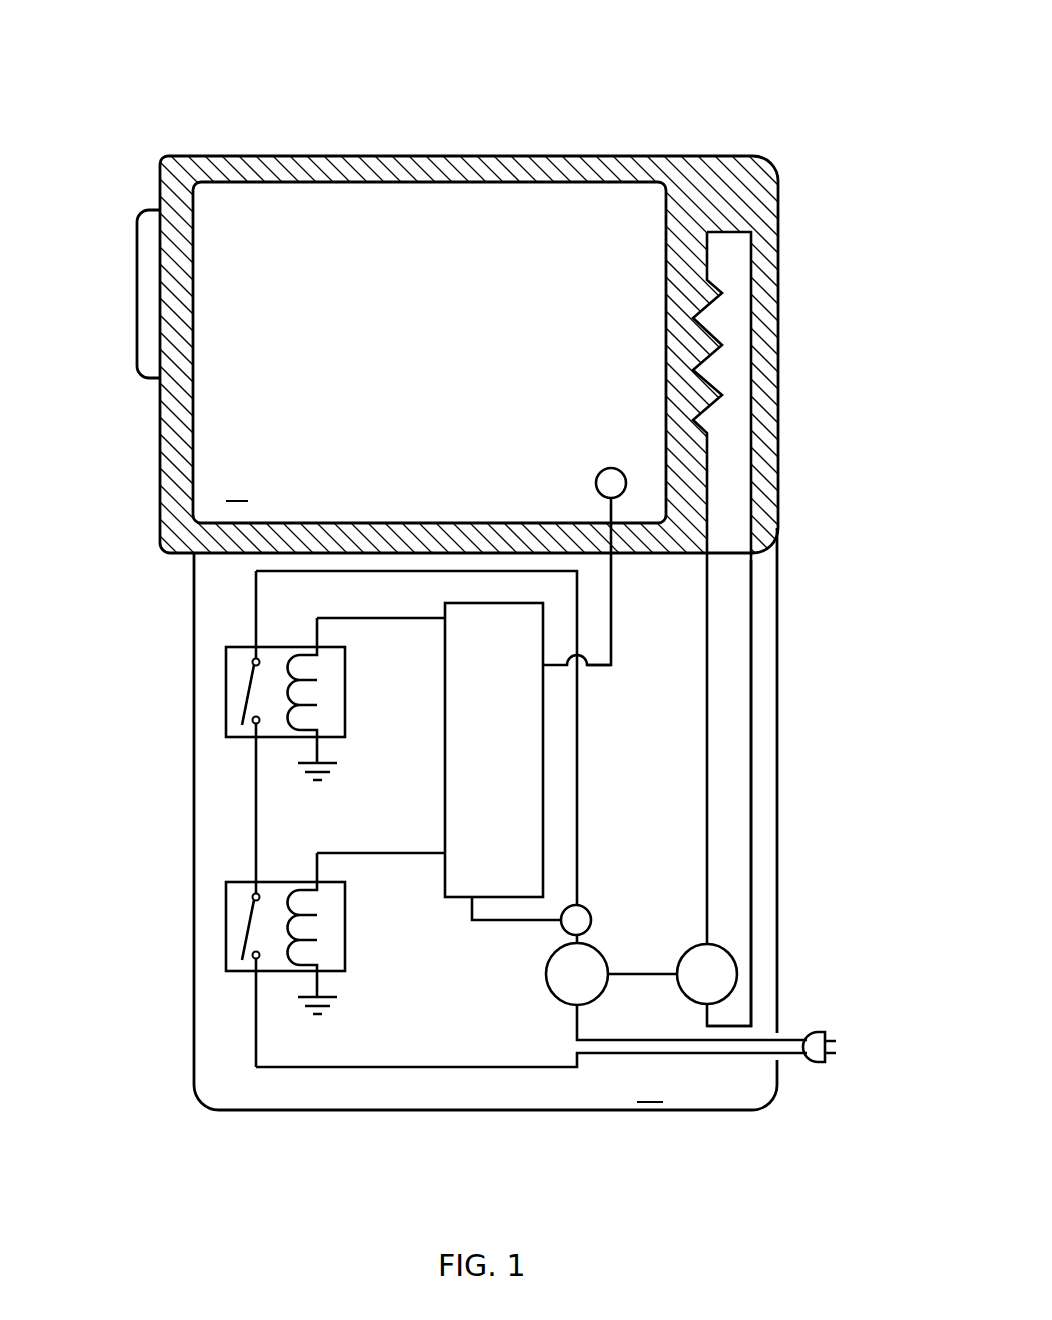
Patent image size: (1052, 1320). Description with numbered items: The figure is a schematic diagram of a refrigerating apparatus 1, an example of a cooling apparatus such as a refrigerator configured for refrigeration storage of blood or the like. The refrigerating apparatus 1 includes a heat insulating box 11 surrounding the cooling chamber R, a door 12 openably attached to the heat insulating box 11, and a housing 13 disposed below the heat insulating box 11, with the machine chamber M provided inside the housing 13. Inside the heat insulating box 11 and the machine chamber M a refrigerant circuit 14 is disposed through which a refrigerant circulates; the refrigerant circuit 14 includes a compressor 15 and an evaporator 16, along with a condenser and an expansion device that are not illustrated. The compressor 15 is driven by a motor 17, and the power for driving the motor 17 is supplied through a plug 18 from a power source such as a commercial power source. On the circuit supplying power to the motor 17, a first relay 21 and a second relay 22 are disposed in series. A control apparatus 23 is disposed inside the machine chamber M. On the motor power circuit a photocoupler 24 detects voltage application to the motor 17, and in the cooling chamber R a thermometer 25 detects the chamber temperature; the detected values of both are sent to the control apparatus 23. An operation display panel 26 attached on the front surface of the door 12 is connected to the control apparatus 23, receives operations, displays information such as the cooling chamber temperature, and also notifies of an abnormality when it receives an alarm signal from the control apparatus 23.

The refrigerating apparatus 1 is at (229, 95).
The heat insulating box 11 is at (703, 173).
The door 12 is at (160, 455).
The housing 13 is at (645, 1113).
The refrigerant circuit 14 is at (752, 720).
The compressor 15 is at (697, 943).
The evaporator 16 is at (693, 318).
The motor 17 is at (592, 945).
The plug 18 is at (810, 1063).
The first relay 21 is at (226, 692).
The second relay 22 is at (226, 926).
The control apparatus 23 is at (445, 898).
The photocoupler 24 is at (560, 929).
The thermometer 25 is at (611, 468).
The operation display panel 26 is at (142, 212).